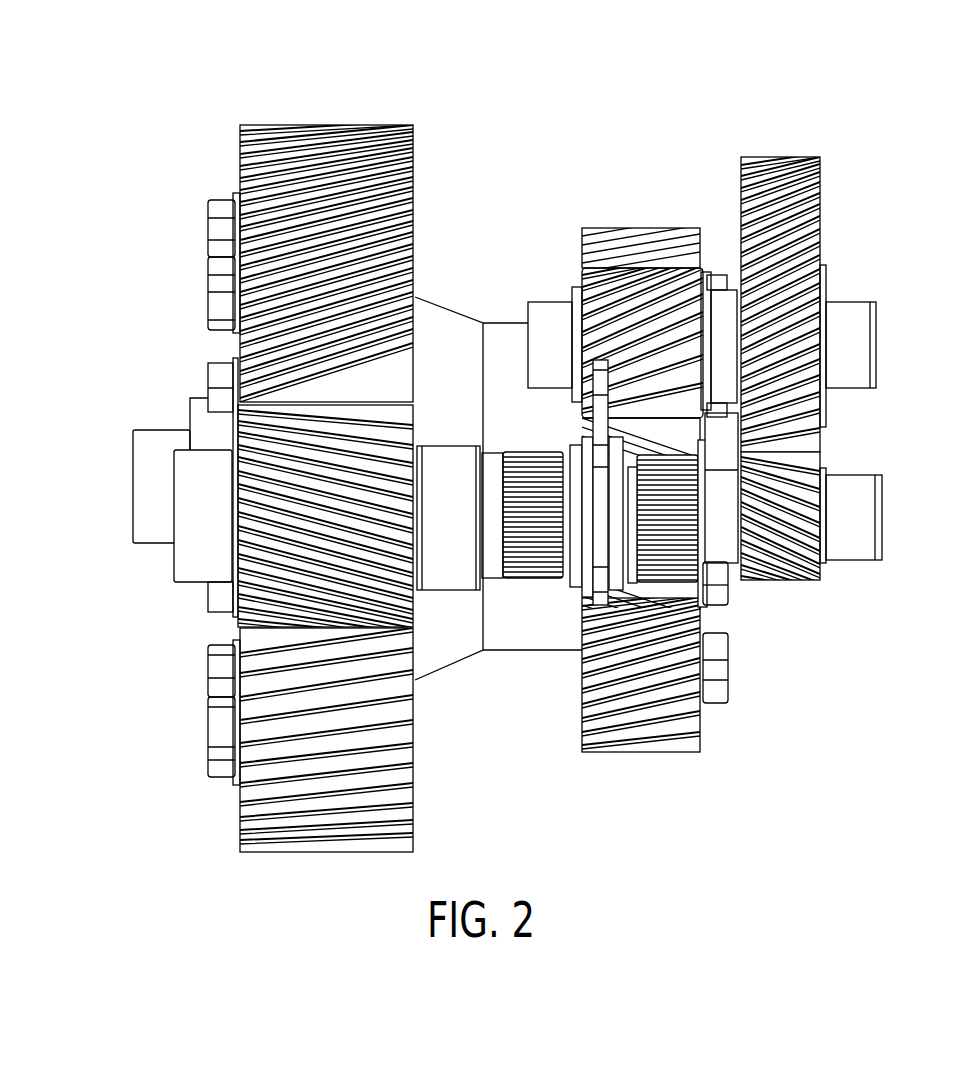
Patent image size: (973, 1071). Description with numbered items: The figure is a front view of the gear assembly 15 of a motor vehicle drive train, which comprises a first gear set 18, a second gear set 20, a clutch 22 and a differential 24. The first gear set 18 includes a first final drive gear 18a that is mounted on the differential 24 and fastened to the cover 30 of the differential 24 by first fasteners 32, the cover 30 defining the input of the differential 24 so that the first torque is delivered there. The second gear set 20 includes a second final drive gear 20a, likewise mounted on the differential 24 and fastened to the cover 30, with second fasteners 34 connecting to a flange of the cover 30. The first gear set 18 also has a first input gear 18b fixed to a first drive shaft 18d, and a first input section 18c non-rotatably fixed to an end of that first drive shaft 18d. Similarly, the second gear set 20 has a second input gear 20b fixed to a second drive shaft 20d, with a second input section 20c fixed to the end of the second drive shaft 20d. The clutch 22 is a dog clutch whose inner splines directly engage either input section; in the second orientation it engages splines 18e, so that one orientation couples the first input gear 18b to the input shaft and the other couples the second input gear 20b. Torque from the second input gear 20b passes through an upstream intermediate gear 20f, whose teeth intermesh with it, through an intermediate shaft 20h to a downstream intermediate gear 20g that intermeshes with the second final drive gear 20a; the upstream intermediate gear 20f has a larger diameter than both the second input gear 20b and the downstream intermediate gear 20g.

The gear assembly 15 is at (872, 733).
The first gear set 18 is at (276, 108).
The first final drive gear 18a is at (373, 145).
The first input gear 18b is at (262, 590).
The first input section 18c is at (533, 440).
The first drive shaft 18d is at (443, 573).
The splines 18e is at (513, 563).
The second gear set 20 is at (732, 110).
The second final drive gear 20a is at (695, 753).
The second input gear 20b is at (800, 555).
The second input section 20c is at (710, 583).
The second drive shaft 20d is at (848, 527).
The upstream intermediate gear 20f is at (775, 170).
The downstream intermediate gear 20g is at (655, 290).
The intermediate shaft 20h is at (848, 352).
The clutch 22 is at (598, 598).
The differential 24 is at (430, 270).
The cover 30 is at (435, 651).
The first fasteners 32 is at (217, 238).
The second fasteners 34 is at (717, 693).